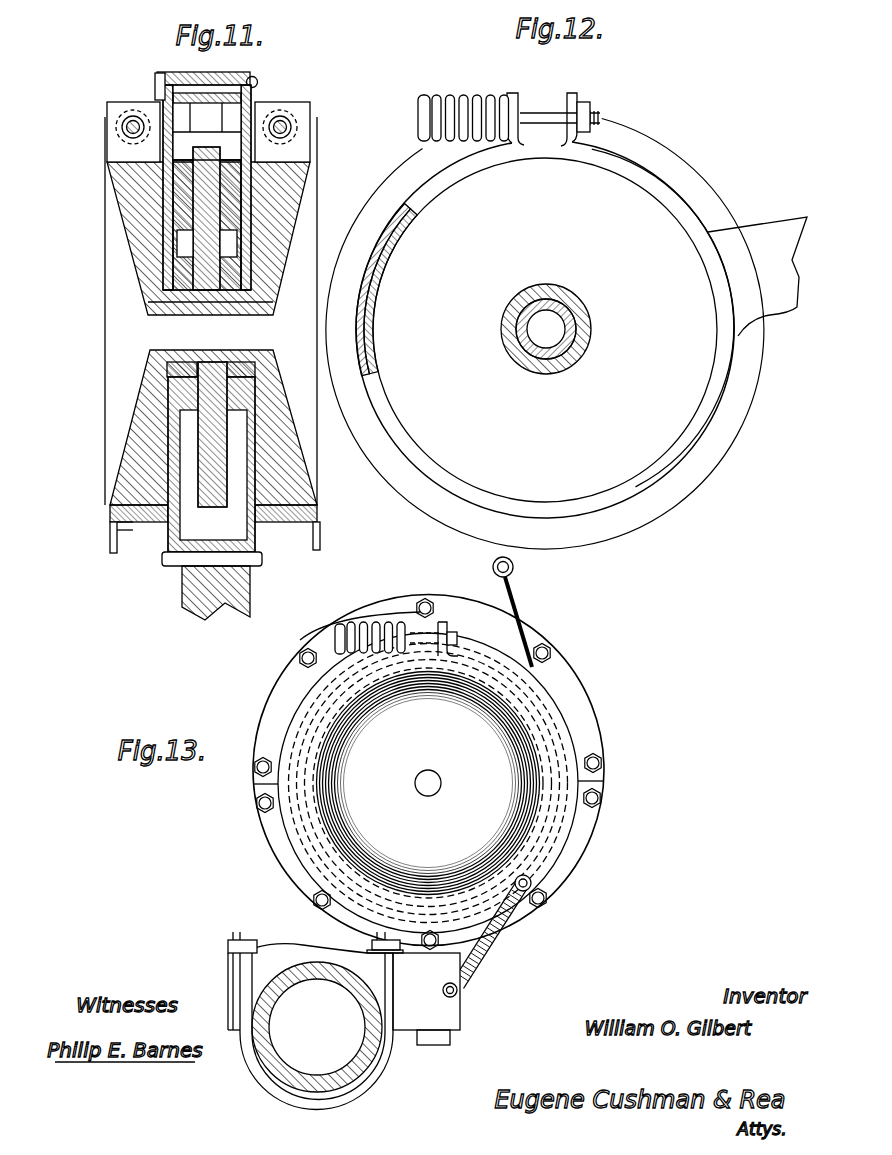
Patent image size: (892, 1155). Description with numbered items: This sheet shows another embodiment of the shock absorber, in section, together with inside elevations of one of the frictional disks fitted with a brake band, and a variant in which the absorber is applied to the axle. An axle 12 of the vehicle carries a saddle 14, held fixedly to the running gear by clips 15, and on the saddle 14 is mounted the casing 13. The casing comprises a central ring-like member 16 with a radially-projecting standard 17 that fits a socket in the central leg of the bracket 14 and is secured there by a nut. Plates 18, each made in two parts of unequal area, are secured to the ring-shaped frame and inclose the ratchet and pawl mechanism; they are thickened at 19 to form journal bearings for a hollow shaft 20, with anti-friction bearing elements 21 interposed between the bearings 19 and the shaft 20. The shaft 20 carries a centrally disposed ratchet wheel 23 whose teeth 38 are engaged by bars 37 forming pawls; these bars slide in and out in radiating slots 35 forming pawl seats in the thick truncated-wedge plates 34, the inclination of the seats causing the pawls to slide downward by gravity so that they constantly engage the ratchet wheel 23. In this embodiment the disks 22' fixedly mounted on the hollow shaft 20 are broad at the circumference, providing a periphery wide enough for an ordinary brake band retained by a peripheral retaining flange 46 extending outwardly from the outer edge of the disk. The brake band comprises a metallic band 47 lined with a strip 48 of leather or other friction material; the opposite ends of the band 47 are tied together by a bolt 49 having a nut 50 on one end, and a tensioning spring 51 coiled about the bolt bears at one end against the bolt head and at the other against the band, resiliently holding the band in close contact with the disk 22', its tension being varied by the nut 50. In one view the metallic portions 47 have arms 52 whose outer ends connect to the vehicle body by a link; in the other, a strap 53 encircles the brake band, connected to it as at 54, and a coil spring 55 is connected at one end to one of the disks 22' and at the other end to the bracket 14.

In FIG. 13, the axle 12 is at (320, 982).
In FIG. 11, the casing 13 is at (216, 76).
In FIG. 13, the saddle 14 is at (465, 1001).
In FIG. 13, the clips 15 is at (365, 1054).
In FIG. 11, the central ring-like member 16 is at (105, 136).
In FIG. 11, the radially-projecting standard 17 is at (295, 150).
In FIG. 11, the plates 18 is at (160, 72).
In FIG. 11, the journal bearings 19 is at (133, 120).
In FIG. 13, the journal bearings 19 is at (338, 641).
In FIG. 11, the hollow shaft 20 is at (176, 315).
In FIG. 12, the hollow shaft 20 is at (595, 316).
In FIG. 11, the anti-friction bearing elements 21 is at (168, 297).
In FIG. 12, the anti-friction bearing elements 21 is at (558, 288).
In FIG. 11, the disks 22' is at (214, 333).
In FIG. 12, the disks 22' is at (575, 330).
In FIG. 11, the ratchet wheel 23 is at (255, 166).
In FIG. 11, the plates 34 is at (168, 190).
In FIG. 11, the radiating slots 35 is at (230, 117).
In FIG. 11, the bars 37 is at (183, 148).
In FIG. 11, the teeth 38 is at (210, 560).
In FIG. 12, the peripheral retaining flange 46 is at (690, 500).
In FIG. 13, the peripheral retaining flange 46 is at (560, 713).
In FIG. 12, the metallic band 47 is at (646, 165).
In FIG. 12, the strip 48 is at (655, 185).
In FIG. 12, the bolt 49 is at (476, 98).
In FIG. 12, the nut 50 is at (580, 104).
In FIG. 12, the tensioning spring 51 is at (452, 96).
In FIG. 13, the tensioning spring 51 is at (348, 622).
In FIG. 12, the arms 52 is at (757, 276).
In FIG. 13, the strap 53 is at (485, 614).
In FIG. 13, the connection 54 is at (336, 629).
In FIG. 13, the coil spring 55 is at (492, 948).